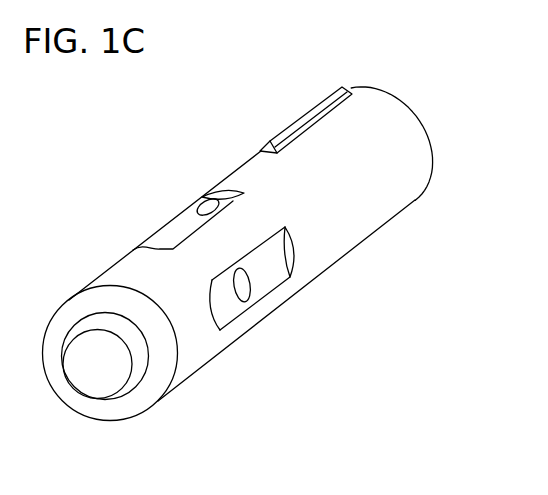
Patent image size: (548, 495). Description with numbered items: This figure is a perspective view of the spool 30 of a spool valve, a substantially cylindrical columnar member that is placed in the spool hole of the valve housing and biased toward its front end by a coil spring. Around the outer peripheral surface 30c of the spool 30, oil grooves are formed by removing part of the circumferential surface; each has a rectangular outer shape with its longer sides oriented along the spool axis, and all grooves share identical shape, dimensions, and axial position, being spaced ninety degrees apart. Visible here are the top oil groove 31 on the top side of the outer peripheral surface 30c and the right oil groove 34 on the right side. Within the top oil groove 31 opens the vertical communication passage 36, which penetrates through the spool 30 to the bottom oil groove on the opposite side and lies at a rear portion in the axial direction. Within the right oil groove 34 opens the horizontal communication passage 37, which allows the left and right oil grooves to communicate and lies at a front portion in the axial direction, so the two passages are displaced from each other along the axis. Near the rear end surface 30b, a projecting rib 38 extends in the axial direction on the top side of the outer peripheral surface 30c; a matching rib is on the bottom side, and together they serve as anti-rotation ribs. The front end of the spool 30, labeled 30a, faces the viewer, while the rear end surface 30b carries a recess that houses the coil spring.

The spool 30 is at (275, 279).
The bore of body 30a is at (105, 372).
The rear end surface 30b is at (406, 97).
The outer peripheral surface 30c is at (382, 187).
The top oil groove 31 is at (162, 240).
The right oil groove 34 is at (227, 308).
The vertical communication passage 36 is at (197, 206).
The horizontal communication passage 37 is at (248, 296).
The projecting rib 38 is at (314, 106).